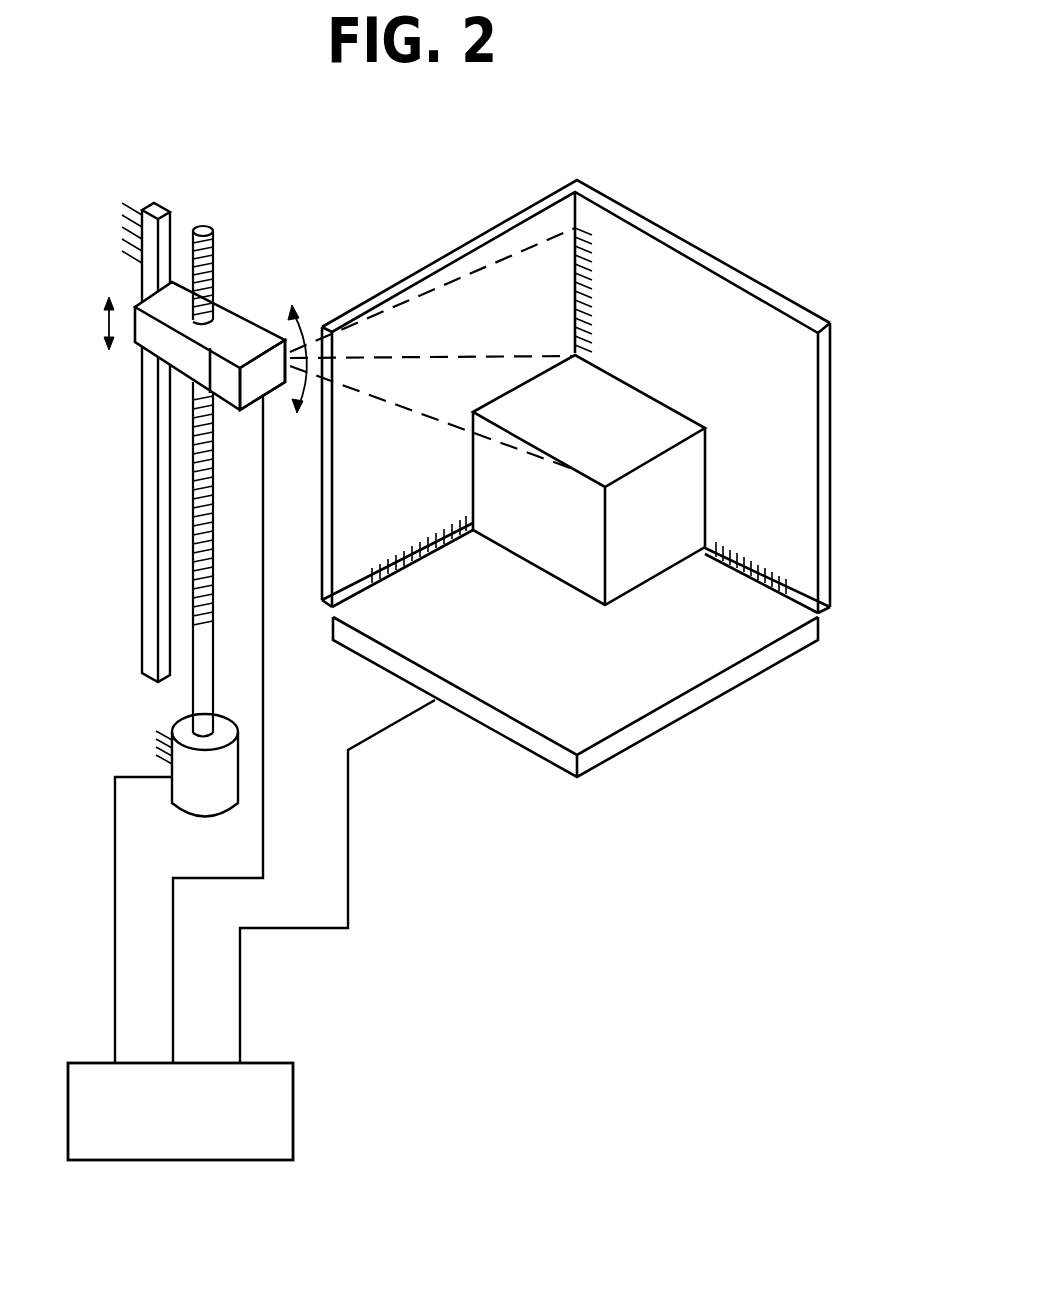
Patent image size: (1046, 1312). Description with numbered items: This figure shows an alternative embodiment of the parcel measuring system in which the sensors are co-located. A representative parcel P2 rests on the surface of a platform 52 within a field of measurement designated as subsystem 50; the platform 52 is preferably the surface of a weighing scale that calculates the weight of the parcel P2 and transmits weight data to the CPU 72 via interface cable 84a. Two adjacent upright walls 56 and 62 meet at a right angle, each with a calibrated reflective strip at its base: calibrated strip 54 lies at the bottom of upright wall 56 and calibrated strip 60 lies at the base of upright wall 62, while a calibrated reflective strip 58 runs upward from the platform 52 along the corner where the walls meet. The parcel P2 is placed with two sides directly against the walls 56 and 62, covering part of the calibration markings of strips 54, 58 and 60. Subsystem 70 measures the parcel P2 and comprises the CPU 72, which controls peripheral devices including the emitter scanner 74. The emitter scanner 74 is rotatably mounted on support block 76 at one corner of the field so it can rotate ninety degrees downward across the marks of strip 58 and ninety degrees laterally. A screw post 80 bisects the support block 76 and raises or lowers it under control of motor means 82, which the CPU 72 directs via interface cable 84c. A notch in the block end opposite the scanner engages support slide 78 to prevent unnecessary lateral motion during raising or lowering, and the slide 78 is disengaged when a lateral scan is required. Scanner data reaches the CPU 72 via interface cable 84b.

The subsystem 50 is at (858, 428).
The platform 52 is at (707, 662).
The calibrated strip 54 is at (792, 578).
The upright wall 56 is at (797, 512).
The calibrated reflective strip 58 is at (597, 268).
The calibrated strip 60 is at (428, 535).
The upright wall 62 is at (537, 225).
The parcel P2 is at (625, 410).
The subsystem 70 is at (432, 840).
The CPU 72 is at (287, 1095).
The emitter scanner 74 is at (238, 345).
The support block 76 is at (147, 340).
The support slide 78 is at (147, 487).
The screw post 80 is at (212, 268).
The motor means 82 is at (213, 803).
The interface cable 84a is at (307, 930).
The interface cable 84b is at (200, 880).
The interface cable 84c is at (115, 977).